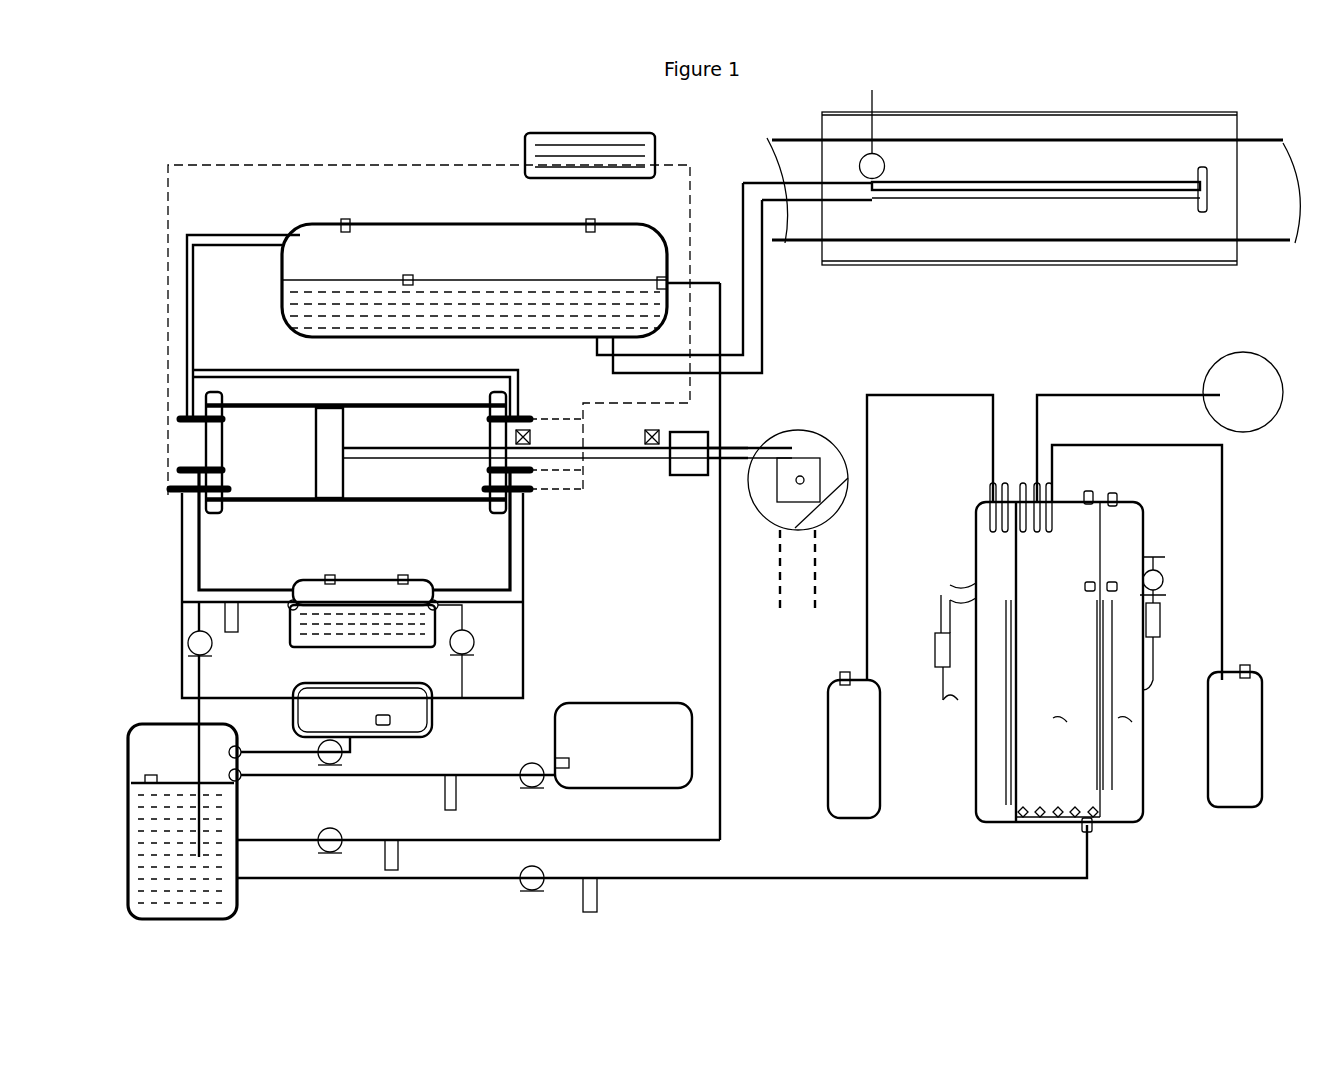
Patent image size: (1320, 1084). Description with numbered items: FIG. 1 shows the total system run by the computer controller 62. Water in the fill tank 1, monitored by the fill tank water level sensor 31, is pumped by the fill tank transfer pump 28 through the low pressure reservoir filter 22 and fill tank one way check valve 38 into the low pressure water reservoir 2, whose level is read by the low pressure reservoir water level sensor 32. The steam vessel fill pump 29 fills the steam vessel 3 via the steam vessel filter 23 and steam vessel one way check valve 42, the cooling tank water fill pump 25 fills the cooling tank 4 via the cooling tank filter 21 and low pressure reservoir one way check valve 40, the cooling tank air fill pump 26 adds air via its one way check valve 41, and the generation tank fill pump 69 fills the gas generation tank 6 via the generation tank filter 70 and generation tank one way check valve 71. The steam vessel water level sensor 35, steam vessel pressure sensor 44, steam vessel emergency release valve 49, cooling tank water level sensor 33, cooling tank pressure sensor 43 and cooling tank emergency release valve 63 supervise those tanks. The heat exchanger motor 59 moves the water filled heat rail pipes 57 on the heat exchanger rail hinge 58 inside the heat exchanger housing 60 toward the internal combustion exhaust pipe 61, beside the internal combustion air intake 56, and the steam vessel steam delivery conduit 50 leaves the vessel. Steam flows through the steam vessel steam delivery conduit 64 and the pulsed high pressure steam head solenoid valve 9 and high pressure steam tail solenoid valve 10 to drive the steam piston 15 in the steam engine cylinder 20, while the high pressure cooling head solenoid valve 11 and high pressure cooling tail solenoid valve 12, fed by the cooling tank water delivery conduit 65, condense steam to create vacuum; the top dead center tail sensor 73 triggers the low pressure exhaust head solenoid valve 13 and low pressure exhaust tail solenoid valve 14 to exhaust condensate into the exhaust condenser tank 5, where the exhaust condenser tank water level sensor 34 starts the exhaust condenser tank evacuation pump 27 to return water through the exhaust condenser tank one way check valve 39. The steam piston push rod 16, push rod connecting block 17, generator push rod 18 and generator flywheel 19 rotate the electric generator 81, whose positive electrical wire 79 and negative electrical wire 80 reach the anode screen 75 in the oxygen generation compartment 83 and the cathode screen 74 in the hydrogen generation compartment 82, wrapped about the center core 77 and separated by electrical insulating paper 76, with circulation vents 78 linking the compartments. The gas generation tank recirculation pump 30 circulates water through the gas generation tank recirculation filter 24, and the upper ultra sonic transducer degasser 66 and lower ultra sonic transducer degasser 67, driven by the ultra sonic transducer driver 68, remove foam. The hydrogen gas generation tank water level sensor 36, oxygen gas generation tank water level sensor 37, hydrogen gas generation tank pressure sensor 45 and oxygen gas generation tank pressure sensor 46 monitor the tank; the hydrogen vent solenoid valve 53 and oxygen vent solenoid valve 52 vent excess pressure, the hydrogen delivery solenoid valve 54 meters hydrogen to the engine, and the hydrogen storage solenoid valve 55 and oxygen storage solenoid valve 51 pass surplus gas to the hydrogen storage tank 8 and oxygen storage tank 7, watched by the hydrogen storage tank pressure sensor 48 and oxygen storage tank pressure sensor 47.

The fill tank 1 is at (638, 703).
The low pressure water reservoir 2 is at (170, 724).
The steam vessel 3 is at (298, 226).
The cooling tank 4 is at (292, 622).
The exhaust condenser tank 5 is at (432, 725).
The gas generation tank 6 is at (1135, 822).
The oxygen storage tank 7 is at (828, 684).
The hydrogen storage tank 8 is at (1262, 766).
The high pressure steam head solenoid valve 9 is at (228, 418).
The high pressure steam tail solenoid valve 10 is at (490, 418).
The high pressure cooling head solenoid valve 11 is at (228, 470).
The high pressure cooling tail solenoid valve 12 is at (490, 470).
The low pressure exhaust head solenoid valve 13 is at (180, 493).
The low pressure exhaust tail solenoid valve 14 is at (523, 493).
The steam piston 15 is at (317, 430).
The steam piston push rod 16 is at (393, 448).
The push rod connecting block 17 is at (670, 472).
The generator push rod 18 is at (738, 446).
The generator flywheel 19 is at (788, 443).
The steam engine cylinder 20 is at (415, 403).
The cooling tank filter 21 is at (238, 620).
The low pressure reservoir filter 22 is at (445, 795).
The steam vessel filter 23 is at (385, 858).
The gas generation tank recirculation filter 24 is at (1156, 648).
The cooling tank water fill pump 25 is at (212, 647).
The cooling tank air fill pump 26 is at (474, 646).
The exhaust condenser tank evacuation pump 27 is at (344, 760).
The fill tank transfer pump 28 is at (520, 787).
The steam vessel fill pump 29 is at (318, 852).
The gas generation tank recirculation pump 30 is at (1162, 570).
The fill tank water level sensor 31 is at (569, 760).
The low pressure reservoir water level sensor 32 is at (152, 775).
The cooling tank water level sensor 33 is at (350, 614).
The exhaust condenser tank water level sensor 34 is at (376, 720).
The steam vessel water level sensor 35 is at (413, 275).
The hydrogen gas generation tank water level sensor 36 is at (1085, 588).
The oxygen gas generation tank water level sensor 37 is at (1112, 582).
The fill tank one way check valve 38 is at (241, 780).
The exhaust condenser tank one way check valve 39 is at (241, 750).
The low pressure reservoir one way check valve 40 is at (300, 605).
The cooling tank air fill pump one way check valve 41 is at (428, 605).
The steam vessel one way check valve 42 is at (657, 280).
The cooling tank pressure sensor 43 is at (330, 575).
The steam vessel pressure sensor 44 is at (595, 220).
The hydrogen gas generation tank pressure sensor 45 is at (1091, 492).
The oxygen gas generation tank pressure sensor 46 is at (1117, 493).
The oxygen storage tank pressure sensor 47 is at (841, 672).
The hydrogen storage tank pressure sensor 48 is at (1250, 667).
The steam vessel emergency release valve 49 is at (350, 220).
The steam vessel steam delivery conduit 50 is at (742, 182).
The oxygen storage solenoid valve 51 is at (988, 500).
The oxygen vent solenoid valve 52 is at (1004, 532).
The hydrogen vent solenoid valve 53 is at (1022, 483).
The hydrogen delivery solenoid valve 54 is at (1036, 532).
The hydrogen storage solenoid valve 55 is at (1051, 498).
The internal combustion air intake 56 is at (1276, 366).
The water filled heat rail pipes 57 is at (1025, 195).
The heat exchanger rail hinge 58 is at (1198, 208).
The heat exchanger motor 59 is at (886, 166).
The heat exchanger housing 60 is at (1180, 265).
The internal combustion exhaust pipe 61 is at (1268, 245).
The computer controller 62 is at (655, 135).
The cooling tank emergency release valve 63 is at (403, 575).
The steam vessel steam delivery conduit 64 is at (222, 235).
The cooling tank water delivery conduit 65 is at (448, 590).
The hydrogen generation tank upper ultra sonic transducer degasser 66 is at (950, 584).
The hydrogen generation tank lower ultra sonic transducer degasser 67 is at (943, 712).
The hydrogen generation tank ultra sonic transducer driver 68 is at (935, 645).
The generation tank fill pump 69 is at (520, 890).
The generation tank filter 70 is at (583, 898).
The generation tank one way check valve 71 is at (1084, 832).
The top dead center tail sensor 73 is at (531, 437).
The cathode screen 74 is at (1097, 655).
The anode screen 75 is at (1005, 630).
The electrical insulating paper 76 is at (1015, 792).
The center core 77 is at (1102, 802).
The circulation vents 78 is at (1042, 806).
The positive electrical wire 79 is at (780, 578).
The negative electrical wire 80 is at (815, 578).
The electric generator 81 is at (818, 484).
The hydrogen generation compartment 82 is at (1062, 708).
The oxygen generation compartment 83 is at (1125, 708).